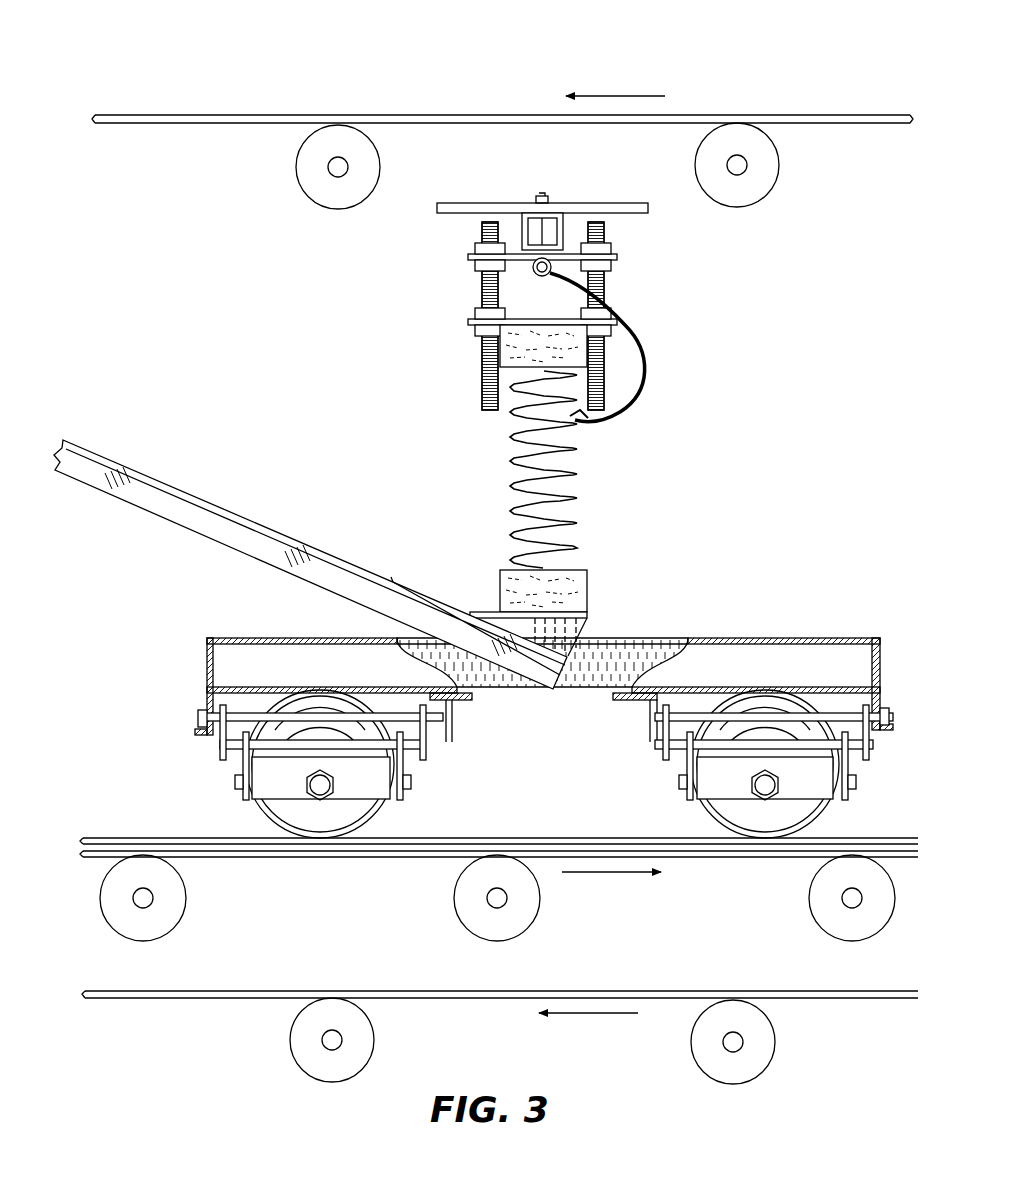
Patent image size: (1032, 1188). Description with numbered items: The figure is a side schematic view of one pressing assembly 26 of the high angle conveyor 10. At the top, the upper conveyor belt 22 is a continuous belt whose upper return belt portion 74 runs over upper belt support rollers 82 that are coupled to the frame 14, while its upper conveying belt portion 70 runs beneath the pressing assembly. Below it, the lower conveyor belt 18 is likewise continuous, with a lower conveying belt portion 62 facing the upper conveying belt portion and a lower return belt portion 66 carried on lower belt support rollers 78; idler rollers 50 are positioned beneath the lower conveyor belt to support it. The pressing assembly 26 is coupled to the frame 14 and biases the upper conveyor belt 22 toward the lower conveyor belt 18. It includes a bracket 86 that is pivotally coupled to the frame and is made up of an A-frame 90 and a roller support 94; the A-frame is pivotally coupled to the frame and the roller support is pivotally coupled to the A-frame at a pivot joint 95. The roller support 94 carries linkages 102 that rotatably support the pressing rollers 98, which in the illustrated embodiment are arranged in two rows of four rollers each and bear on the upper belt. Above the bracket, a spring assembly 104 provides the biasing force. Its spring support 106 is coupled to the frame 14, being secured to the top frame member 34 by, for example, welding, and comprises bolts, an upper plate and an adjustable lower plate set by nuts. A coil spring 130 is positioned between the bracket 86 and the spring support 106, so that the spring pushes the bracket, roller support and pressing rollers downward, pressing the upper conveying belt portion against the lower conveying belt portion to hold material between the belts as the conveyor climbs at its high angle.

The high angle conveyor 10 is at (115, 66).
The frame 14 is at (542, 201).
The top frame member 34 is at (523, 230).
The lower conveyor belt 18 is at (467, 948).
The upper conveyor belt 22 is at (467, 467).
The pressing assembly 26 is at (825, 310).
The idler roller 50 is at (172, 912).
The lower conveying belt portion 62 is at (103, 858).
The lower return belt portion 66 is at (115, 1000).
The upper conveying belt portion 70 is at (113, 838).
The upper return belt portion 74 is at (237, 116).
The lower belt support roller 78 is at (362, 1060).
The upper belt support roller 82 is at (313, 175).
The bracket 86 is at (310, 533).
The A-frame 90 is at (230, 535).
The roller support 94 is at (653, 655).
The pivot pin 95 is at (530, 672).
The pressing roller 98 is at (347, 810).
The linkage 102 is at (400, 772).
The spring assembly 104 is at (348, 368).
The spring support 106 is at (436, 293).
The spring 130 is at (577, 505).